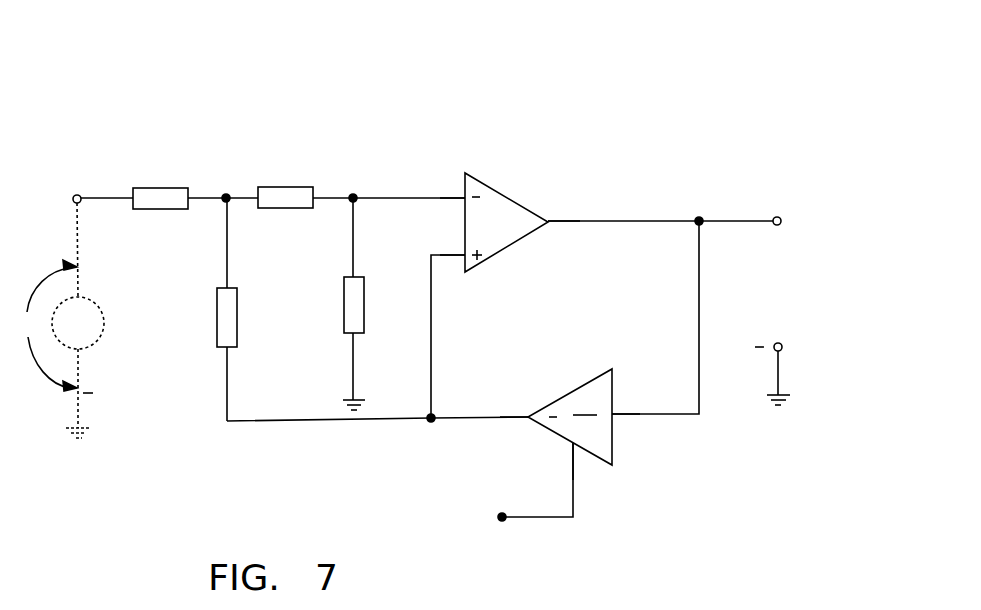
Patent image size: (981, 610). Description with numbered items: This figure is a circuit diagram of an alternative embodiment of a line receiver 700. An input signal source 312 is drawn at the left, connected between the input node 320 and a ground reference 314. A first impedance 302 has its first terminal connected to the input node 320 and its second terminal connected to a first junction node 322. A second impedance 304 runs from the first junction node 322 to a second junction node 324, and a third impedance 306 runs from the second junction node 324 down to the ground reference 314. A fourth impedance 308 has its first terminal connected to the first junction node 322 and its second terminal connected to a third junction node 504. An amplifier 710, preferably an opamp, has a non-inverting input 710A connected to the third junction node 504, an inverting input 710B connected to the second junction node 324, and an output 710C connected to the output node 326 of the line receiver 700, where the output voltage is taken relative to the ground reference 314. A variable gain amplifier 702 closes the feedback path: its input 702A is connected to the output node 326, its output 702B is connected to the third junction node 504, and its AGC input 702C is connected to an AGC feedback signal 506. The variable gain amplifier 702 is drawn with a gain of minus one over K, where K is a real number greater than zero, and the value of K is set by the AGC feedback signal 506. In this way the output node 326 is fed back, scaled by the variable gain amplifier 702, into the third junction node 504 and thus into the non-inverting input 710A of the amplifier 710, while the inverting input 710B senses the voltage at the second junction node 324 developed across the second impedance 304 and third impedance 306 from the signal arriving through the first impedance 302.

The line receiver 700 is at (282, 74).
The input node 320 is at (77, 193).
The first impedance 302 is at (150, 210).
The first junction node 322 is at (228, 192).
The second impedance 304 is at (272, 210).
The second junction node 324 is at (353, 193).
The amplifier 710 is at (500, 193).
The non-inverting input 710A is at (463, 253).
The inverting input 710B is at (463, 195).
The output 710C is at (549, 220).
The output node 326 is at (779, 215).
The input voltage source 312 is at (104, 322).
The ground reference 314 is at (80, 405).
The fourth impedance 308 is at (238, 293).
The third impedance 306 is at (365, 318).
The third junction node 504 is at (432, 423).
The AGC feedback signal 506 is at (500, 518).
The variable gain amplifier 702 is at (575, 390).
The input 702A is at (614, 413).
The output 702B is at (545, 393).
The AGC input 702C is at (571, 450).